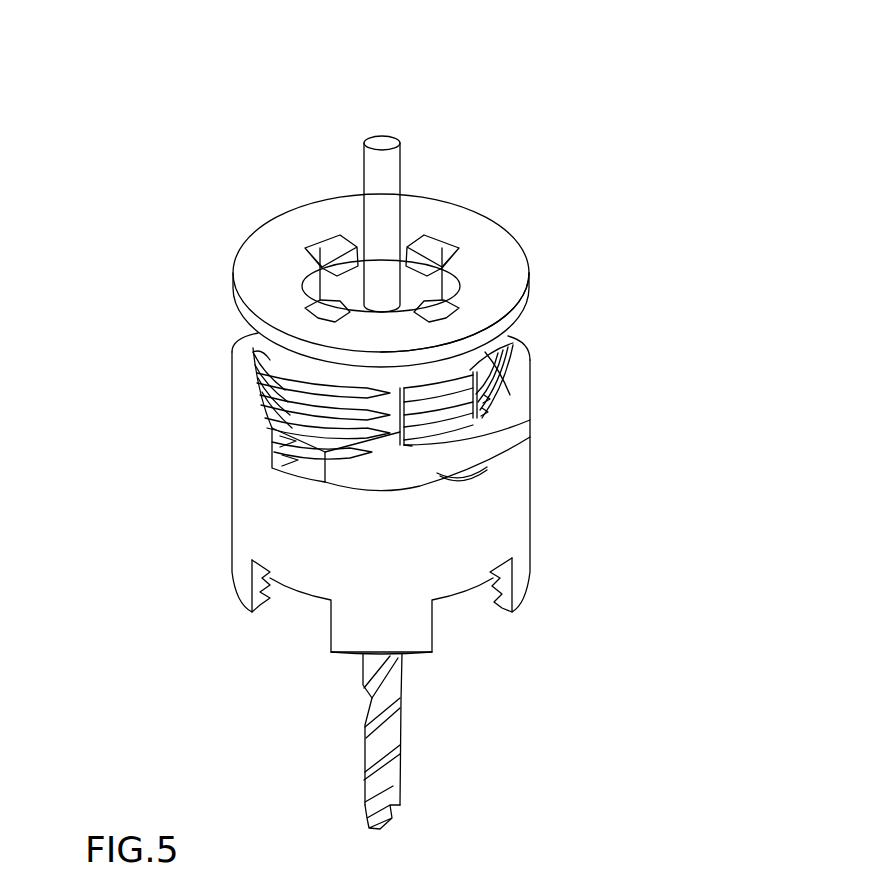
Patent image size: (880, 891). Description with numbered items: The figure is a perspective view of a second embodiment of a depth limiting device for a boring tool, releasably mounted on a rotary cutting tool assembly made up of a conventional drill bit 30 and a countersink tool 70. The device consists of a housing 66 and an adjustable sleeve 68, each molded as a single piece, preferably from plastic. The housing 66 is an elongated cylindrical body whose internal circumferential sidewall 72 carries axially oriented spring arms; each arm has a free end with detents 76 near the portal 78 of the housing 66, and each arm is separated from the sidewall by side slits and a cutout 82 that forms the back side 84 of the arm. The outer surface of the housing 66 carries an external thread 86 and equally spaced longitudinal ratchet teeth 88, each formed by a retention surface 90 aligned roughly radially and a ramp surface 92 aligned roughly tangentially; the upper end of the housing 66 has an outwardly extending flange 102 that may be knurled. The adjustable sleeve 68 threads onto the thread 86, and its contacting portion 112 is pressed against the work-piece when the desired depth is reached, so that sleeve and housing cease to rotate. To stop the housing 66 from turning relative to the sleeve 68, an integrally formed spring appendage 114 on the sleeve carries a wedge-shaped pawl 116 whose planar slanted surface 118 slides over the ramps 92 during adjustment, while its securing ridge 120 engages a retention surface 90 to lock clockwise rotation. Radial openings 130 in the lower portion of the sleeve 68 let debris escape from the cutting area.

The drill bit 30 is at (388, 192).
The housing 66 is at (513, 366).
The adjustable sleeve 68 is at (268, 538).
The countersink tool 70 is at (420, 295).
The internal circumferential sidewall 72 is at (316, 248).
The detents 76 is at (442, 256).
The portal 78 is at (315, 274).
The cutout 82 is at (435, 244).
The back side 84 is at (318, 303).
The external thread 86 is at (288, 435).
The ratchet teeth 88 is at (260, 397).
The retention surface 90 is at (492, 412).
The ramp surface 92 is at (253, 368).
The flange 102 is at (510, 328).
The contacting portion 112 is at (422, 652).
The spring appendage 114 is at (467, 480).
The pawl 116 is at (365, 450).
The planar slanted surface 118 is at (270, 457).
The securing ridge 120 is at (406, 444).
The radial openings 130 is at (487, 607).